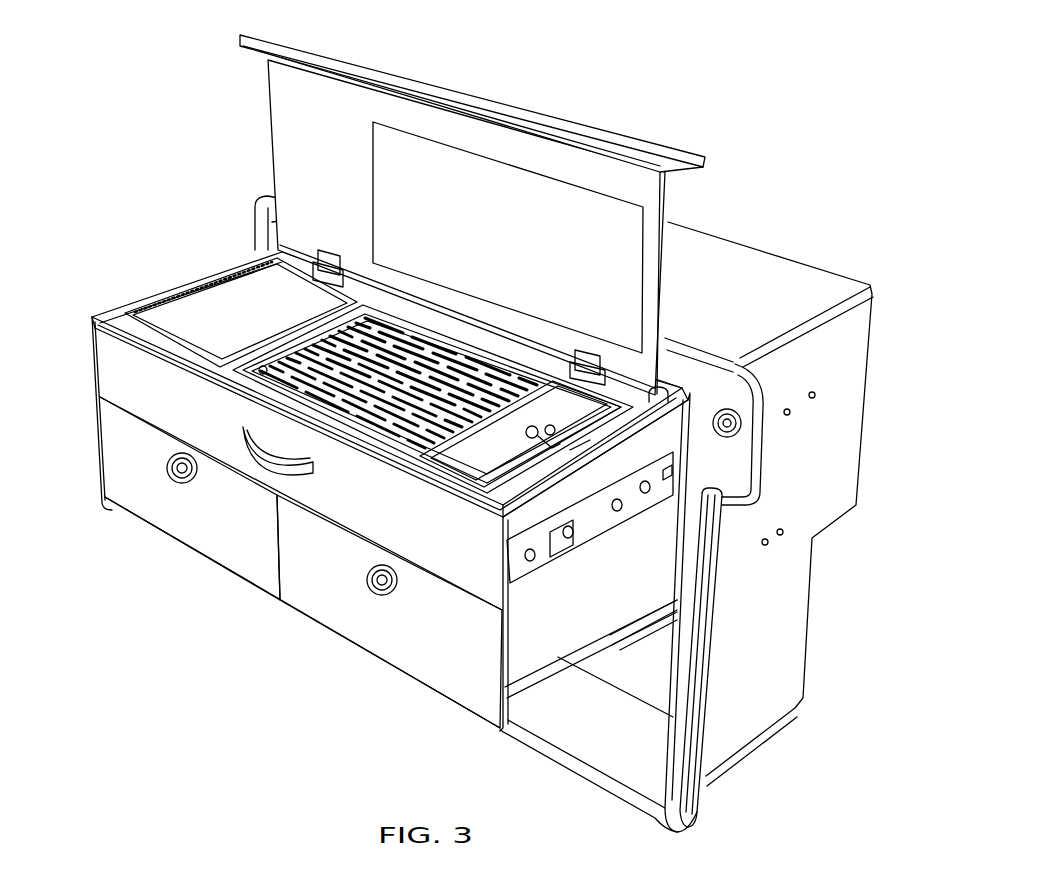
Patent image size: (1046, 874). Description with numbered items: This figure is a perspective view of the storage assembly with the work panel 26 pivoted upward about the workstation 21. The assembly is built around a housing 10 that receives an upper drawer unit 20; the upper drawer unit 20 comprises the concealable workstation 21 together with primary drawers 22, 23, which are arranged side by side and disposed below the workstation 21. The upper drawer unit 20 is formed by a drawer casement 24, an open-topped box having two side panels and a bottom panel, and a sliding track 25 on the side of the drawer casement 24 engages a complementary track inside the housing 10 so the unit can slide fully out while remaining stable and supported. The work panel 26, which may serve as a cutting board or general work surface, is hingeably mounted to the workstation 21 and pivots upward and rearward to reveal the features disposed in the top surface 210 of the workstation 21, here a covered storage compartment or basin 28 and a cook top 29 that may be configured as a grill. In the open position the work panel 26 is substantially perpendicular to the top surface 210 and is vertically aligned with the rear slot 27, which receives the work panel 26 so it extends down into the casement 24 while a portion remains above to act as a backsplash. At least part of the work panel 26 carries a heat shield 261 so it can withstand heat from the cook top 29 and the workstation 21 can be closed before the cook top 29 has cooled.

The housing 10 is at (776, 278).
The upper drawer unit 20 is at (90, 302).
The workstation 21 is at (336, 494).
The primary drawer 22 is at (234, 537).
The primary drawer 23 is at (476, 667).
The drawer casement 24 is at (558, 620).
The sliding track 25 is at (620, 521).
The top surface 210 is at (580, 453).
The work panel 26 is at (482, 229).
The heat shield 261 is at (510, 192).
The rear slot 27 is at (658, 397).
The basin 28 is at (254, 327).
The cook top 29 is at (418, 396).